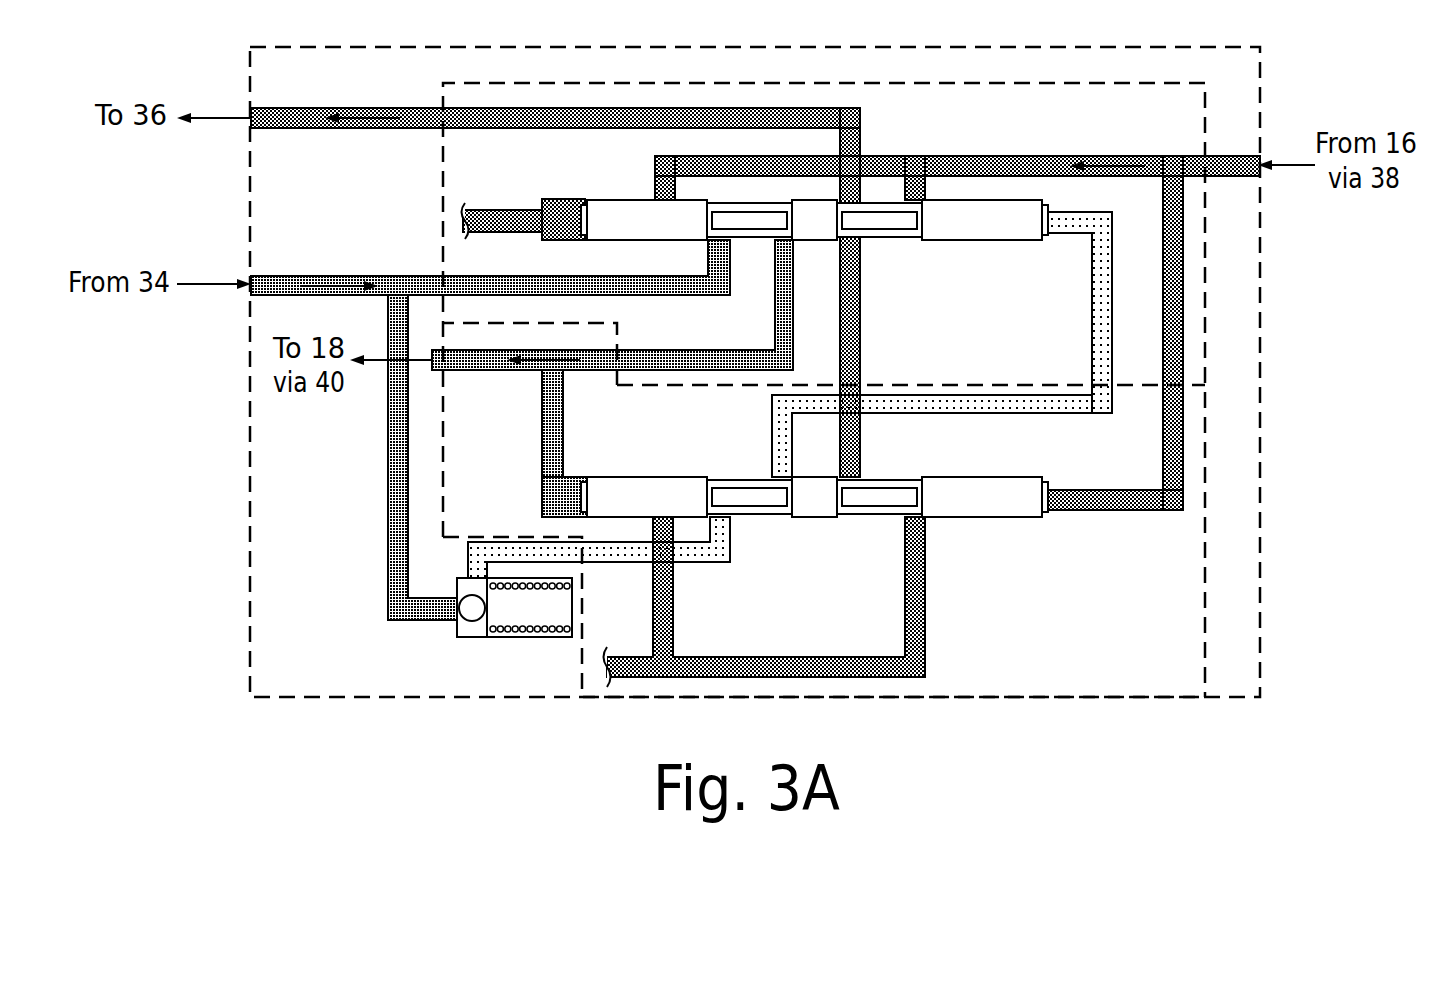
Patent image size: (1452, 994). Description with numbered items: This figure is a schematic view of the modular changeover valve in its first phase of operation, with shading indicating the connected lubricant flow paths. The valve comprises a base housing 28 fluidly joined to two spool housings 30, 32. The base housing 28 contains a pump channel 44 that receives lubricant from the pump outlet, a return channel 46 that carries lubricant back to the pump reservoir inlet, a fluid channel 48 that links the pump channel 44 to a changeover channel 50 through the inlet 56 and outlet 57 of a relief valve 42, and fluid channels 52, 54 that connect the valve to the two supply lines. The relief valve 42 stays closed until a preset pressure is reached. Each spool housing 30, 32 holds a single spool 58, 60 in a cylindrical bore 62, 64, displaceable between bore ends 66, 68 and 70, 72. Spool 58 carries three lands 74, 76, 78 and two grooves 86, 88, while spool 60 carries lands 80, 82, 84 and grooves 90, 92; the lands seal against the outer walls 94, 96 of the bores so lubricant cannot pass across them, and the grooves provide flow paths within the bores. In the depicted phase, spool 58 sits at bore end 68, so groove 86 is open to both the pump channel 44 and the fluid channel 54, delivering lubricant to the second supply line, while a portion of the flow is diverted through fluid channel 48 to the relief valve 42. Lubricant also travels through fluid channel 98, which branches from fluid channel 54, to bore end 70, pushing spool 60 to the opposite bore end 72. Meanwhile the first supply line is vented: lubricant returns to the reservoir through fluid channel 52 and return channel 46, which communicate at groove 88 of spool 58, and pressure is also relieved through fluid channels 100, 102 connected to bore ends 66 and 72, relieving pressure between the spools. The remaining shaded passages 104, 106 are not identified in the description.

The base housing 28 is at (1262, 432).
The spool housing 30 is at (1205, 303).
The spool housing 32 is at (1207, 548).
The relief valve 42 is at (522, 662).
The pump channel 44 is at (275, 278).
The return channel 46 is at (275, 118).
The fluid channel 48 is at (397, 483).
The changeover channel 50 is at (610, 552).
The fluid channel 52 is at (1245, 154).
The fluid channel 54 is at (437, 372).
The relief valve inlet 56 is at (458, 620).
The relief valve outlet 57 is at (470, 576).
The spool 58 is at (799, 191).
The spool 60 is at (816, 468).
The cylindrical bore 62 is at (748, 200).
The cylindrical bore 64 is at (742, 477).
The bore end 66 is at (540, 236).
The bore end 68 is at (1052, 212).
The bore end 70 is at (540, 497).
The bore end 72 is at (1050, 492).
The land 74 is at (644, 220).
The land 76 is at (814, 220).
The land 78 is at (985, 220).
The land 80 is at (644, 497).
The land 82 is at (814, 497).
The land 84 is at (985, 497).
The groove 86 is at (749, 240).
The groove 88 is at (889, 240).
The groove 90 is at (760, 517).
The groove 92 is at (873, 517).
The outer wall 94 is at (950, 200).
The outer wall 96 is at (1000, 477).
The fluid channel 98 is at (552, 428).
The fluid channel 100 is at (500, 222).
The fluid channel 102 is at (1172, 318).
The transfer line 104 is at (1100, 318).
The line to cylinder 82 106 is at (850, 353).